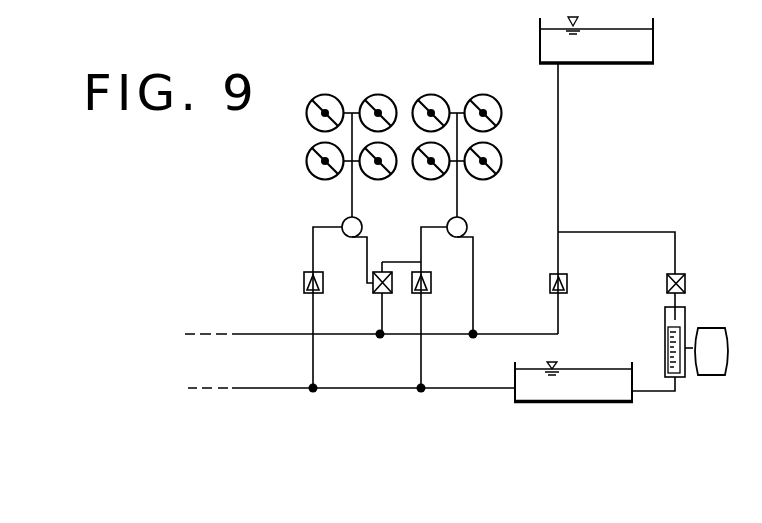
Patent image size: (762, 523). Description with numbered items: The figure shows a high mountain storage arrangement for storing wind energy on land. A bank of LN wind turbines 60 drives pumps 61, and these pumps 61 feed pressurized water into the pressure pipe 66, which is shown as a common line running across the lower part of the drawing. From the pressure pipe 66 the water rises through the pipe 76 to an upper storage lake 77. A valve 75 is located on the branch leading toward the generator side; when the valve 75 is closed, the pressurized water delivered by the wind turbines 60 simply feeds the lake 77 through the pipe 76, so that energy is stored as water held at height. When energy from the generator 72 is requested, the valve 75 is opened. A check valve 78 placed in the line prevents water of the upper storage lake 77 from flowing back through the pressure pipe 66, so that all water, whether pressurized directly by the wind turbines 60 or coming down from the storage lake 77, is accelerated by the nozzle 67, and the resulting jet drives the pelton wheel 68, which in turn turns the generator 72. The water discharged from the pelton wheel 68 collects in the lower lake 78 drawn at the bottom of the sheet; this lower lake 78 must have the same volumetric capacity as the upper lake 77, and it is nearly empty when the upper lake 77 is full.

The LN wind turbines 60 is at (306, 158).
The pumps 61 is at (362, 222).
The pressure pipe 66 is at (513, 334).
The nozzle 67 is at (662, 342).
The pelton wheel 68 is at (669, 340).
The generator 72 is at (718, 376).
The valve 75 is at (686, 283).
The pipe 76 is at (559, 162).
The lake 77 is at (625, 57).
The check valve 78 is at (607, 395).